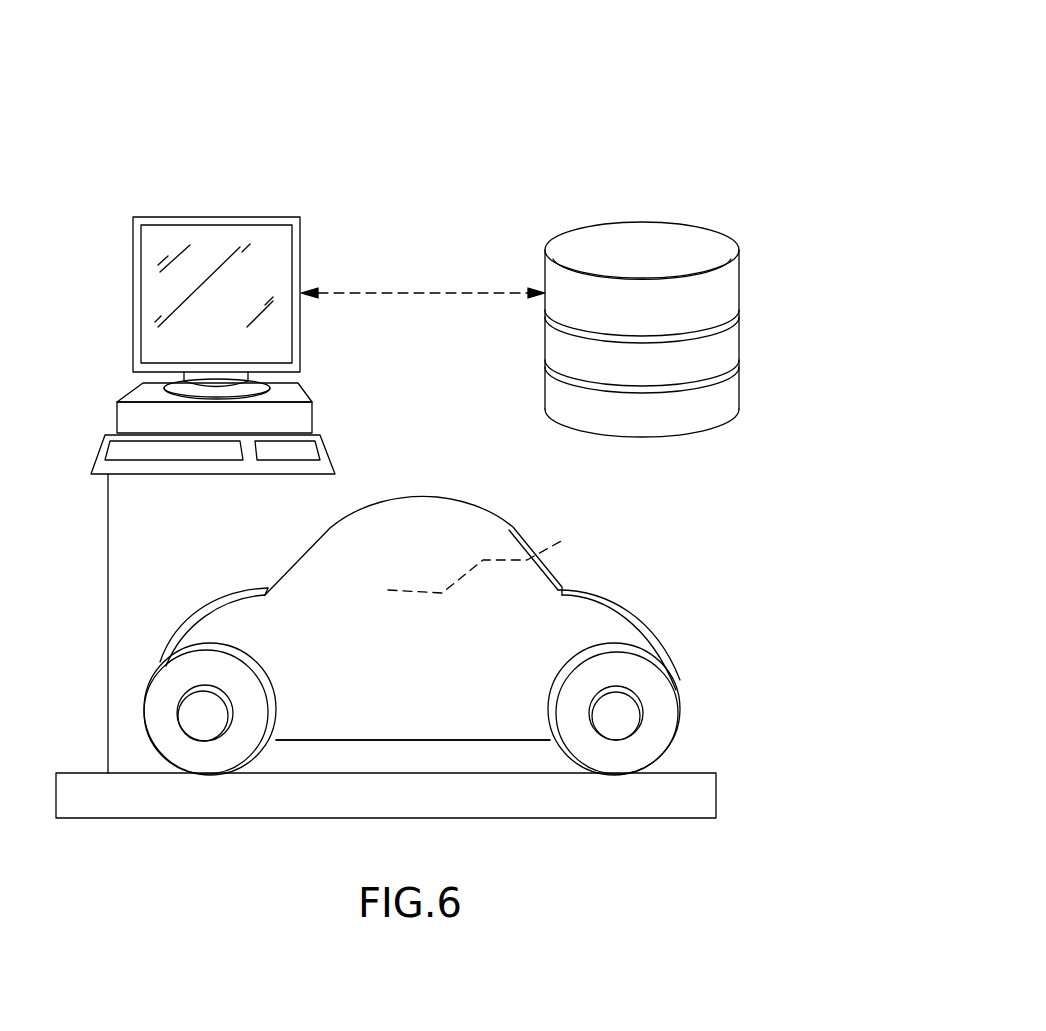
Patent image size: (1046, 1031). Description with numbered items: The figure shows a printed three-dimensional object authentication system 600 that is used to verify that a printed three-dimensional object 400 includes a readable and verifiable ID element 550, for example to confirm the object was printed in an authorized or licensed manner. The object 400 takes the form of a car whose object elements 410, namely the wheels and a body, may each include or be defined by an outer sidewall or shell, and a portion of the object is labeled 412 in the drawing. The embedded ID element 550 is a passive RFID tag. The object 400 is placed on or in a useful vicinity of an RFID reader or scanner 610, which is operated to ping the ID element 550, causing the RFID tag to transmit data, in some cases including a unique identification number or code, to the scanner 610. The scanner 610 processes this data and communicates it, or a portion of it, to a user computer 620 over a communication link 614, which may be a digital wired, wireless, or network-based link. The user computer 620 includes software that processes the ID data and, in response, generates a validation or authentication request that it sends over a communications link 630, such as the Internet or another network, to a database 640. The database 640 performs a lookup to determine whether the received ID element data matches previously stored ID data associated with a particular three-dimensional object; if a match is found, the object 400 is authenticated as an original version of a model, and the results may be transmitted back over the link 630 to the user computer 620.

The printed 3D object authentication system 600 is at (663, 84).
The user computer 620 is at (104, 328).
The communications link 630 is at (425, 295).
The database 640 is at (747, 209).
The communication link 614 is at (108, 602).
The RFID reader or scanner 610 is at (631, 842).
The printed 3D object 400 is at (447, 677).
The object elements 410 is at (253, 753).
The vehicle underbody 412 is at (423, 727).
The ID element 550 is at (490, 551).